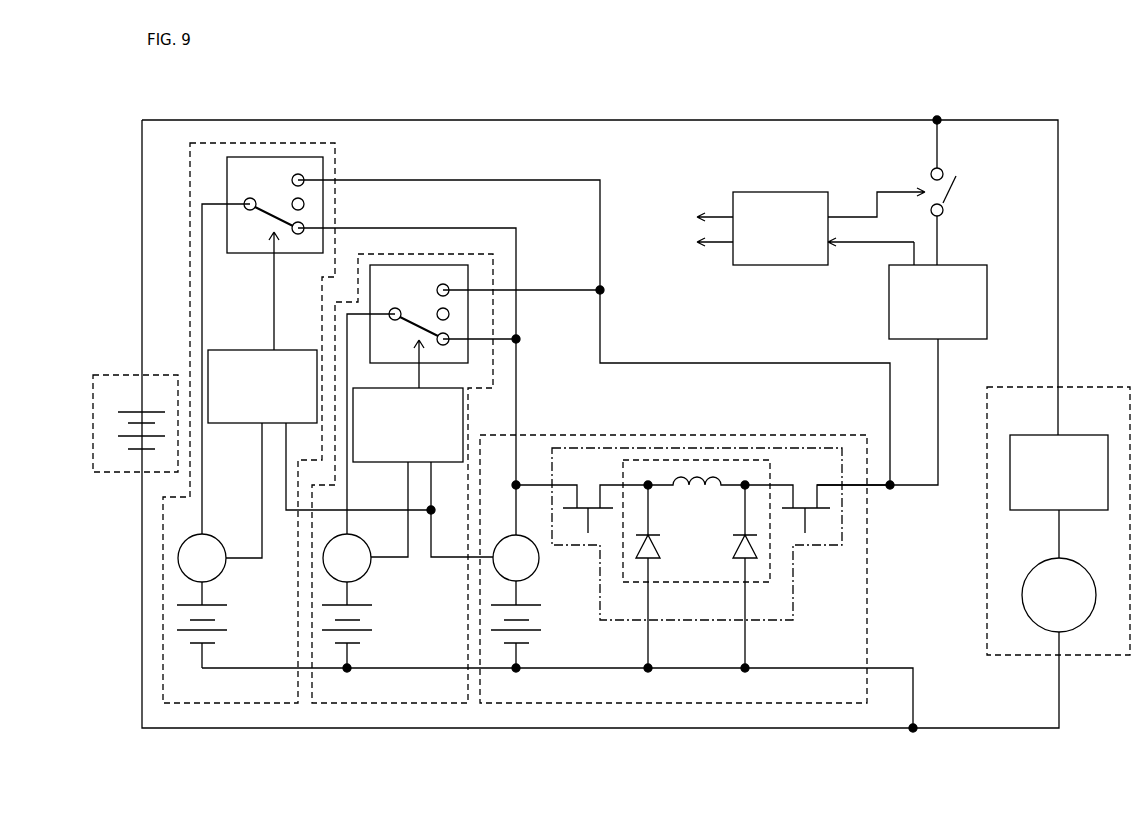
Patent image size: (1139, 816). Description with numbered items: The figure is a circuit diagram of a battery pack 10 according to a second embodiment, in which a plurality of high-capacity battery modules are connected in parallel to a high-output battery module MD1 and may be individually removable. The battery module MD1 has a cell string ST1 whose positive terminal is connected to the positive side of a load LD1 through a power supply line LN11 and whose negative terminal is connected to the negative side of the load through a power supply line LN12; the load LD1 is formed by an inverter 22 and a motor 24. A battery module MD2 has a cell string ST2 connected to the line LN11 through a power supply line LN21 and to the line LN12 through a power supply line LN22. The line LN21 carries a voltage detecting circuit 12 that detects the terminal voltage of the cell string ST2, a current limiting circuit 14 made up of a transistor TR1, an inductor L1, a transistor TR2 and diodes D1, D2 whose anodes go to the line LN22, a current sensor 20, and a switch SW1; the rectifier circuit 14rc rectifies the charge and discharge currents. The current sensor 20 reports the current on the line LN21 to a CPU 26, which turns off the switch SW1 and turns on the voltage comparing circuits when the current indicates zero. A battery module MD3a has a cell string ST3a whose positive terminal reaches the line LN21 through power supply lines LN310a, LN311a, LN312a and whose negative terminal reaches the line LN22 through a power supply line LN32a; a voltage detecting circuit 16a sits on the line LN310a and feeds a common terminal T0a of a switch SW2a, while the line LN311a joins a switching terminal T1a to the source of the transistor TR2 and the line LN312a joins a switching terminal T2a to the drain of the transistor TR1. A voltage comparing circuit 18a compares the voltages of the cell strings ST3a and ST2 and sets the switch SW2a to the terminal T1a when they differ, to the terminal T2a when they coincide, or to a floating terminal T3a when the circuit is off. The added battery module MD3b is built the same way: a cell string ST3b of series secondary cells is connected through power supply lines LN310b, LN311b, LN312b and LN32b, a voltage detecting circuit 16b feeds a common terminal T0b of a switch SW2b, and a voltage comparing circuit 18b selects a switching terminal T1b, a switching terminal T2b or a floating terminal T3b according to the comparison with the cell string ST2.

The battery pack 10 is at (672, 104).
The voltage detecting circuit 12 is at (534, 572).
The current limiting circuit 14 is at (696, 538).
The rectifier circuit 14rc is at (720, 446).
The voltage detecting circuit 16a is at (366, 572).
The voltage detecting circuit 16b is at (222, 572).
The voltage comparing circuit 18a is at (398, 464).
The voltage comparing circuit 18b is at (248, 426).
The current sensor 20 is at (992, 280).
The inverter 22 is at (1085, 434).
The motor 24 is at (1084, 568).
The CPU 26 is at (804, 192).
The switch SW1 is at (950, 194).
The switch SW2a is at (430, 264).
The switch SW2b is at (278, 156).
The common terminal T0a is at (398, 322).
The common terminal T0b is at (250, 212).
The switching terminal T1a is at (452, 286).
The switching terminal T1b is at (306, 177).
The switching terminal T2a is at (452, 334).
The switching terminal T2b is at (306, 224).
The floating terminal T3a is at (437, 314).
The floating terminal T3b is at (292, 204).
The transistor TR1 is at (582, 498).
The transistor TR2 is at (817, 498).
The inductor L1 is at (696, 497).
The diode D1 is at (661, 576).
The diode D2 is at (731, 576).
The cell string ST1 is at (133, 421).
The cell string ST2 is at (533, 624).
The cell string ST3a is at (367, 625).
The cell string ST3b is at (222, 625).
The battery module MD1 is at (124, 474).
The battery module MD2 is at (673, 569).
The battery module MD3a is at (402, 478).
The battery module MD3b is at (249, 423).
The load LD1 is at (1058, 521).
The power supply line LN11 is at (818, 118).
The power supply line LN12 is at (832, 732).
The power supply line LN21 is at (908, 490).
The power supply line LN22 is at (892, 666).
The power supply line LN32a is at (380, 672).
The power supply line LN32b is at (212, 672).
The power supply line LN310a is at (345, 338).
The power supply line LN310b is at (215, 200).
The power supply line LN311a is at (602, 296).
The power supply line LN311b is at (548, 158).
The power supply line LN312a is at (520, 352).
The power supply line LN312b is at (480, 228).